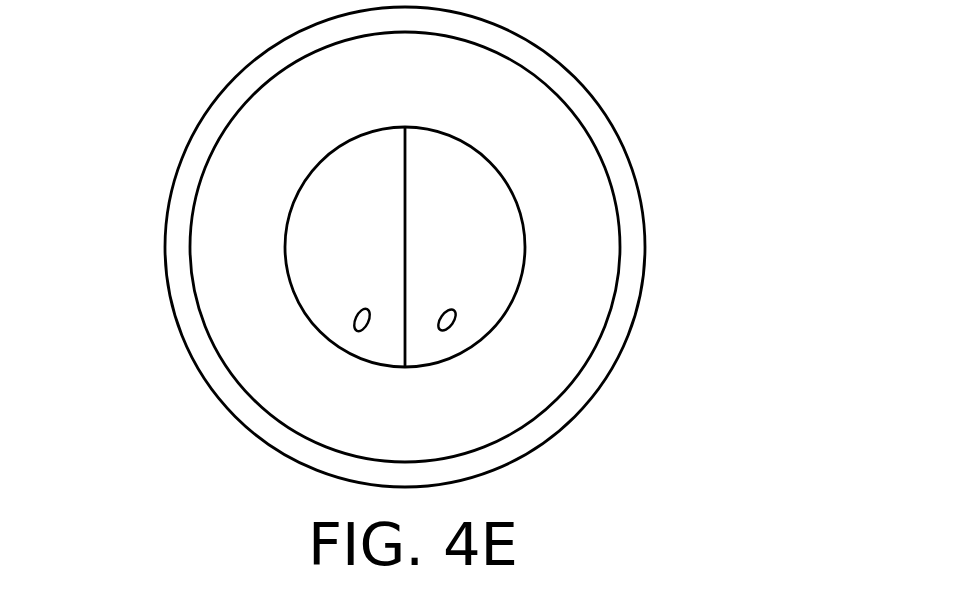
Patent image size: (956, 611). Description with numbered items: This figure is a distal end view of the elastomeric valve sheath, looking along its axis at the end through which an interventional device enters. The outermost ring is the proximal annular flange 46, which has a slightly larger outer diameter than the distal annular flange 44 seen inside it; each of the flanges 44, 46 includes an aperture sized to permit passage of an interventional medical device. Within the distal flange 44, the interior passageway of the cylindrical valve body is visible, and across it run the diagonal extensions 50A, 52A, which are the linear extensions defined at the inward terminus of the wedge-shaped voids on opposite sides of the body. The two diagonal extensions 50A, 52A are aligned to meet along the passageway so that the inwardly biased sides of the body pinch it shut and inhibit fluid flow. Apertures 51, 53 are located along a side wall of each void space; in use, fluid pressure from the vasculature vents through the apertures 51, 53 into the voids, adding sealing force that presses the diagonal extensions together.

The annular flange 44 is at (580, 332).
The annular flange 46 is at (620, 328).
The diagonal extension 50A is at (407, 240).
The diagonal extension 52A is at (405, 253).
The aperture 51 is at (443, 330).
The aperture 53 is at (355, 332).